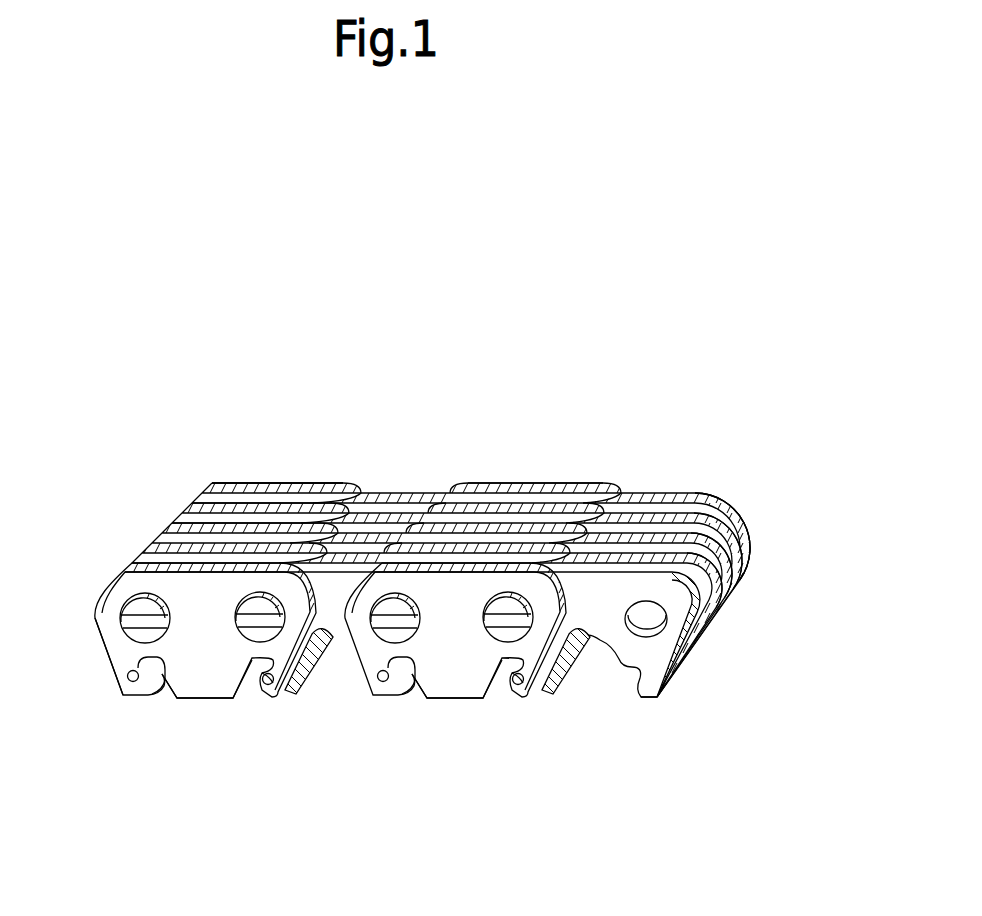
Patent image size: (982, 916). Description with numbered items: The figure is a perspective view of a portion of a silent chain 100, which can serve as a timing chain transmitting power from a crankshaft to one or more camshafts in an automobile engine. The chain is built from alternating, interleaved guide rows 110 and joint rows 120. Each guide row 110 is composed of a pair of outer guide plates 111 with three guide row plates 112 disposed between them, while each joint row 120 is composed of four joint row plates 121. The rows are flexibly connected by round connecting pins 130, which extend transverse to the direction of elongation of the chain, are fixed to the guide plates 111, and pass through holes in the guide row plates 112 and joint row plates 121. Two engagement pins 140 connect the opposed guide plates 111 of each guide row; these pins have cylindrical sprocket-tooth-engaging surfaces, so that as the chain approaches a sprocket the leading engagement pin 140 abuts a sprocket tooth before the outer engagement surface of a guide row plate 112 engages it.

The silent chain 100 is at (486, 385).
The guide row 110 is at (277, 458).
The guide plate 111 is at (298, 482).
The guide row plate 112 is at (245, 506).
The joint row 120 is at (404, 470).
The joint row plate 121 is at (747, 531).
The connecting pin 130 is at (133, 620).
The engagement pin 140 is at (133, 677).